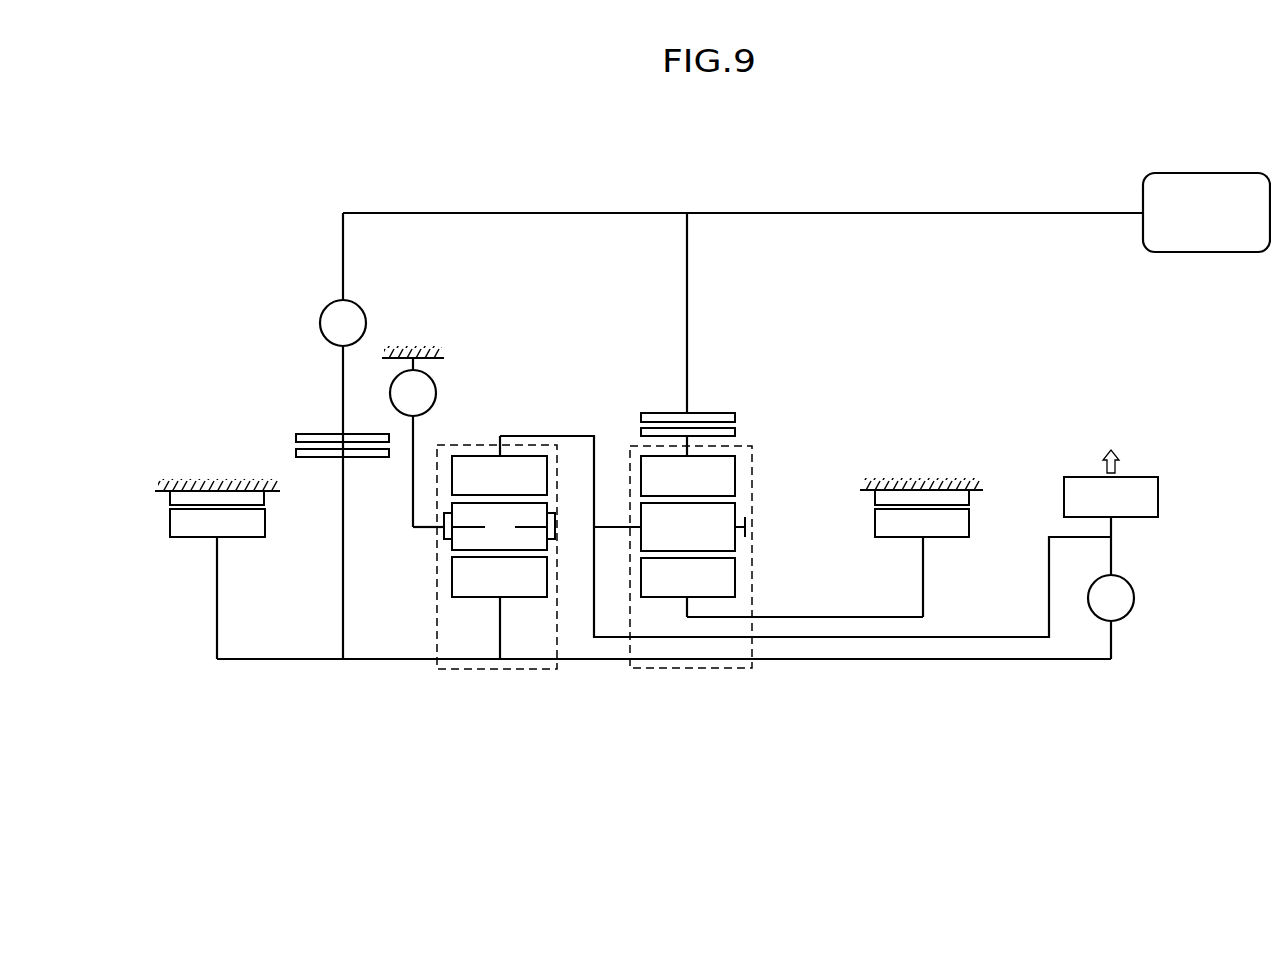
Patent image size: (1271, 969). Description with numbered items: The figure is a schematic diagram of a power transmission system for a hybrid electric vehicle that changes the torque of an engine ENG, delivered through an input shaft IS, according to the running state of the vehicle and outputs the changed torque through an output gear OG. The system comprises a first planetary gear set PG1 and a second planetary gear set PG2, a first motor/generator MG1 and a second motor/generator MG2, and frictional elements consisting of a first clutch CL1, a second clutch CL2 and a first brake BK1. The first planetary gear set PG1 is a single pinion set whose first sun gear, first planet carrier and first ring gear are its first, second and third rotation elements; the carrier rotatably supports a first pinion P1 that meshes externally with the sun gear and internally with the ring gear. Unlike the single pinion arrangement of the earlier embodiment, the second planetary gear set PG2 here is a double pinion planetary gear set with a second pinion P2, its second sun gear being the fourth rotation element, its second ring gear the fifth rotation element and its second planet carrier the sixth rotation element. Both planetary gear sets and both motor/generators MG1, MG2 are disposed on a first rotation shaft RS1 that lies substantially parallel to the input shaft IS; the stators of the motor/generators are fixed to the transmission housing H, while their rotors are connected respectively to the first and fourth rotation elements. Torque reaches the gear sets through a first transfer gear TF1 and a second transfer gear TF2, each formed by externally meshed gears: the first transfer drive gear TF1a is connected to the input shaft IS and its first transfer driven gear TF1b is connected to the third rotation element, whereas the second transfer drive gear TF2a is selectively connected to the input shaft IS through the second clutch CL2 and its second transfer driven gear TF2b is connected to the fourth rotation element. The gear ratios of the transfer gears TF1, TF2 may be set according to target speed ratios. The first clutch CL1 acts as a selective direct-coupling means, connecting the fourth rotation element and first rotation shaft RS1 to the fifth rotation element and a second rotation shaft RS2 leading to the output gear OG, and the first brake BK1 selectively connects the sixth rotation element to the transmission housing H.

The input shaft IS is at (802, 213).
The engine ENG is at (1206, 212).
The first clutch CL1 is at (1111, 617).
The second clutch CL2 is at (343, 436).
The first brake BK1 is at (417, 442).
The transmission housing H is at (413, 356).
The first transfer gear TF1 is at (745, 386).
The first transfer drive gear TF1a is at (720, 412).
The first transfer driven gear TF1b is at (735, 432).
The second transfer gear TF2 is at (287, 403).
The second transfer drive gear TF2a is at (312, 433).
The second transfer driven gear TF2b is at (296, 452).
The first motor/generator MG1 is at (972, 537).
The second motor/generator MG2 is at (180, 543).
The first planetary gear set PG1 is at (667, 552).
The second planetary gear set PG2 is at (452, 593).
The first pinion P1 is at (693, 527).
The second pinion P2 is at (499, 526).
The first rotation shaft RS1 is at (850, 660).
The second rotation shaft RS2 is at (983, 639).
The output gear OG is at (1111, 499).